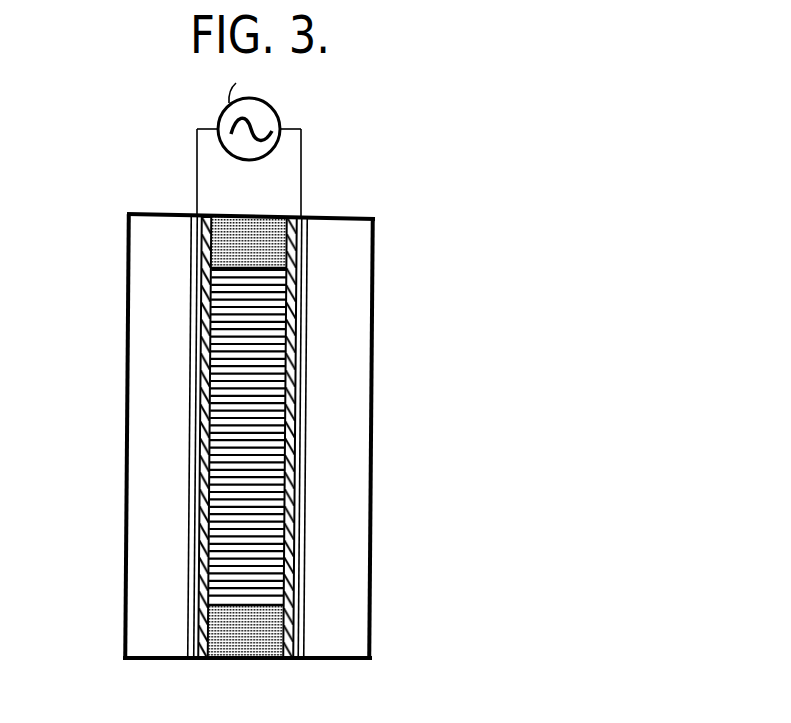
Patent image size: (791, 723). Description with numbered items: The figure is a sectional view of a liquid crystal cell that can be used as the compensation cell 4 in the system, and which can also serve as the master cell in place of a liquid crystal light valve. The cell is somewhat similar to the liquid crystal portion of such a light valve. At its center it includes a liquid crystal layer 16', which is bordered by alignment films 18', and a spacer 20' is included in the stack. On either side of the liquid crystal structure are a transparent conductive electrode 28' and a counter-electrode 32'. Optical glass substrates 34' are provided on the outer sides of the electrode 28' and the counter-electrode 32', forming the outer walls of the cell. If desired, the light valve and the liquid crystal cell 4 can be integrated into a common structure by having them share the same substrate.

The compensation cell 4 is at (414, 216).
The liquid crystal layer 16' is at (258, 487).
The alignment films 18' is at (247, 414).
The spacer 20' is at (235, 657).
The transparent conductive electrode 28' is at (146, 414).
The counter-electrode 32' is at (345, 458).
The optical glass substrates 34' is at (241, 441).